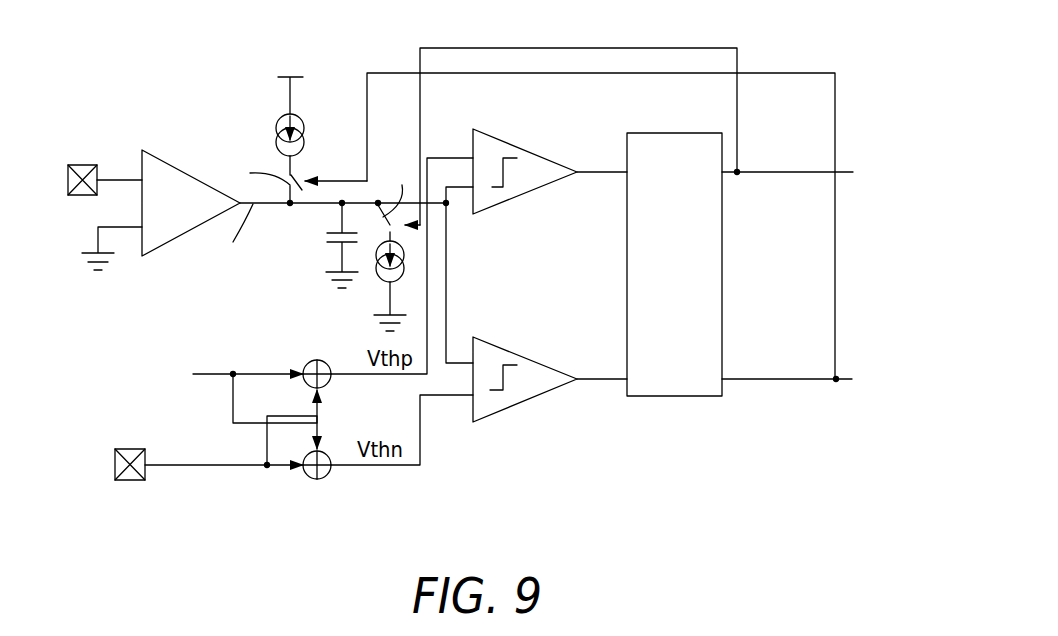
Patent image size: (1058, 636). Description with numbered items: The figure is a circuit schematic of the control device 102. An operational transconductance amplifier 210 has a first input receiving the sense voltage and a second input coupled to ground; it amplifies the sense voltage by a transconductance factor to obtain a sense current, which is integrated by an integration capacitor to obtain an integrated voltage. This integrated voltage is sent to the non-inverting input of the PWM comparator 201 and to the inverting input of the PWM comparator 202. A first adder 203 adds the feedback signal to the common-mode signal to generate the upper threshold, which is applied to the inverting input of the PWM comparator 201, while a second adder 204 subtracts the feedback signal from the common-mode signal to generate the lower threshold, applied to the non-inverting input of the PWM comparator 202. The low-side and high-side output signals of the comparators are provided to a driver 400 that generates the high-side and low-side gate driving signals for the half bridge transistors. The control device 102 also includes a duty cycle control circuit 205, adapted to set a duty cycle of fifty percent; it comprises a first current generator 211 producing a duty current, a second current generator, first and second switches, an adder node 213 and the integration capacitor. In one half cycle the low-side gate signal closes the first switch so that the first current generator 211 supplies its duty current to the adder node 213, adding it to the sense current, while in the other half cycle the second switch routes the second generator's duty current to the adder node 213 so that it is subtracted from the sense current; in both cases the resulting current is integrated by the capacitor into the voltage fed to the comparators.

The control device 102 is at (108, 110).
The duty cycle control circuit 205 is at (308, 179).
The operational transconductance amplifier 210 is at (180, 178).
The first current generator 211 is at (301, 124).
The adder node 213 is at (284, 207).
The PWM comparator 201 is at (500, 148).
The PWM comparator 202 is at (518, 387).
The first adder 203 is at (325, 364).
The second adder 204 is at (323, 476).
The driver 400 is at (670, 153).